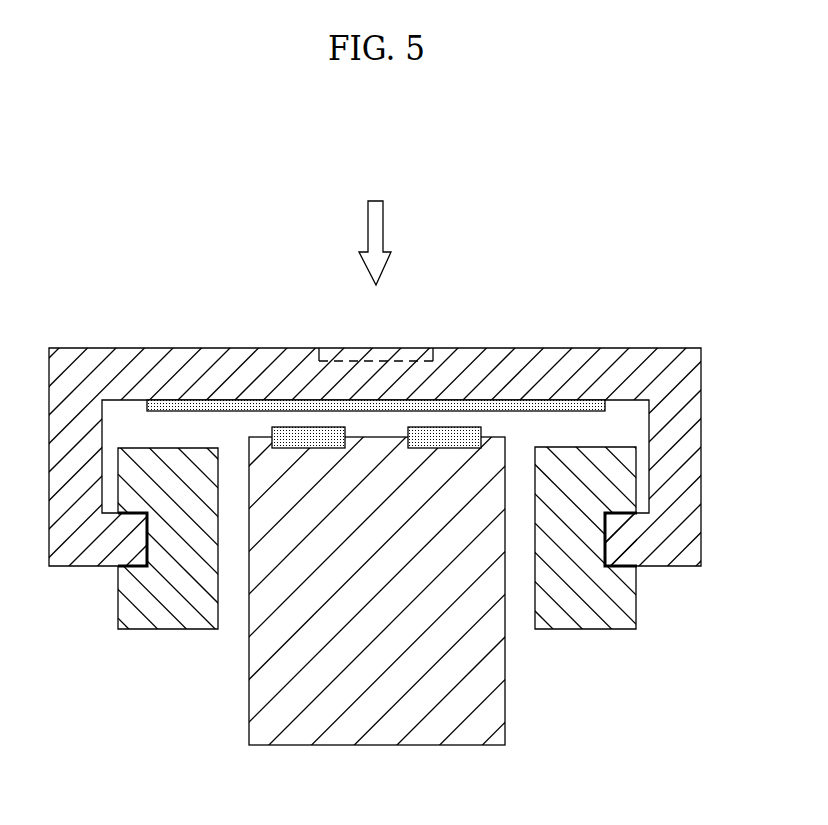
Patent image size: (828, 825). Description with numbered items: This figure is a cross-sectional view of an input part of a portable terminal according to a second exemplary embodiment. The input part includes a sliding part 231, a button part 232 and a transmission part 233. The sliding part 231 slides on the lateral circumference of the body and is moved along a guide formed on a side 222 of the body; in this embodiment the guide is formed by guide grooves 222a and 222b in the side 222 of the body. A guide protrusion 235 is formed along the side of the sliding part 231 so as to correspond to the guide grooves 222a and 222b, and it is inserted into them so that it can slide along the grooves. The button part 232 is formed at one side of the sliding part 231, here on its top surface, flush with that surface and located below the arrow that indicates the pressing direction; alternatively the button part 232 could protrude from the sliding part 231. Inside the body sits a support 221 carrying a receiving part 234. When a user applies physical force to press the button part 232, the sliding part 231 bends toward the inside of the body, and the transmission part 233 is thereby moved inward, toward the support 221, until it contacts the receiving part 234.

The support 221 is at (388, 733).
The side of the body 222 is at (172, 625).
The guide groove 222a is at (133, 550).
The guide groove 222b is at (607, 542).
The sliding part 231 is at (466, 357).
The button part 232 is at (403, 348).
The transmission part 233 is at (227, 405).
The receiving part 234 is at (316, 437).
The guide protrusion 235 is at (623, 533).